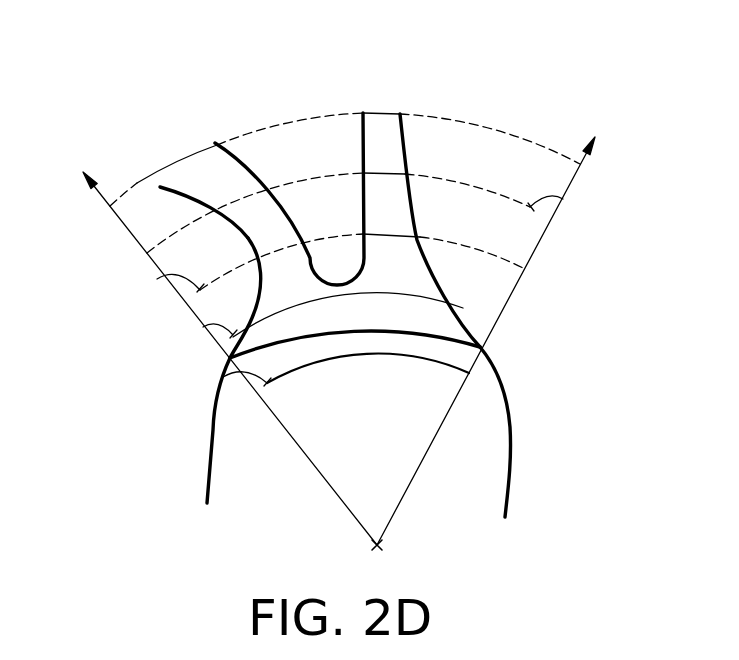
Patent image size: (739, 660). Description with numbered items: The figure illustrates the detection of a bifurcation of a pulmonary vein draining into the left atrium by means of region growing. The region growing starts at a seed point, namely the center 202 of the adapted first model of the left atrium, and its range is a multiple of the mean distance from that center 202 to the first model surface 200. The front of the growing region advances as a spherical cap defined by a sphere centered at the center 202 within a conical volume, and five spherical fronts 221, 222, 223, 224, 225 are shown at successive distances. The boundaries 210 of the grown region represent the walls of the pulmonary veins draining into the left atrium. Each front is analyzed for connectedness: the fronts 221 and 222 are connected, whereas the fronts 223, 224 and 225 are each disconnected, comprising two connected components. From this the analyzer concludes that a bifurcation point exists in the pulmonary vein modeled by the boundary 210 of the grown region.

The first model surface 200 is at (212, 452).
The center of the first model 202 is at (370, 545).
The boundaries of the grown region 210 is at (160, 187).
The spherical front 221 is at (223, 377).
The spherical front 222 is at (203, 327).
The spherical front 223 is at (157, 279).
The spherical front 224 is at (563, 199).
The spherical front 225 is at (487, 127).